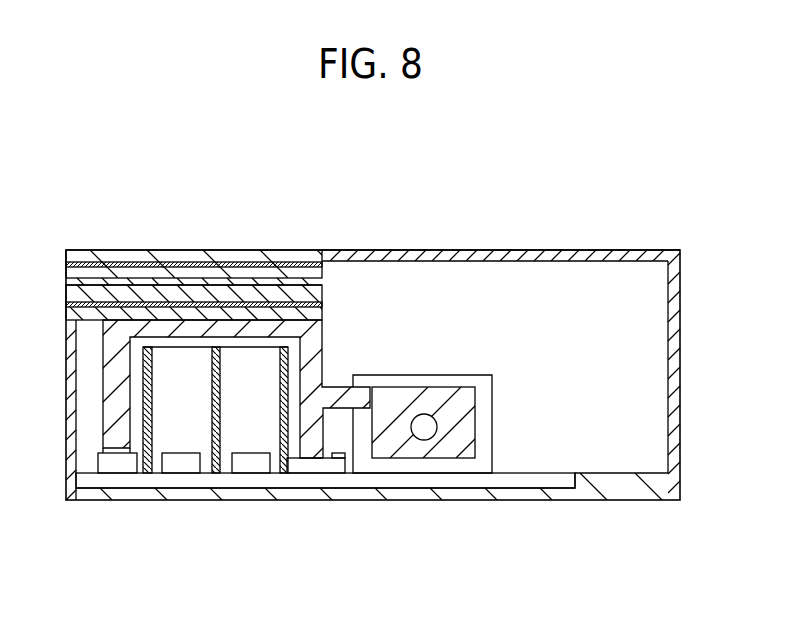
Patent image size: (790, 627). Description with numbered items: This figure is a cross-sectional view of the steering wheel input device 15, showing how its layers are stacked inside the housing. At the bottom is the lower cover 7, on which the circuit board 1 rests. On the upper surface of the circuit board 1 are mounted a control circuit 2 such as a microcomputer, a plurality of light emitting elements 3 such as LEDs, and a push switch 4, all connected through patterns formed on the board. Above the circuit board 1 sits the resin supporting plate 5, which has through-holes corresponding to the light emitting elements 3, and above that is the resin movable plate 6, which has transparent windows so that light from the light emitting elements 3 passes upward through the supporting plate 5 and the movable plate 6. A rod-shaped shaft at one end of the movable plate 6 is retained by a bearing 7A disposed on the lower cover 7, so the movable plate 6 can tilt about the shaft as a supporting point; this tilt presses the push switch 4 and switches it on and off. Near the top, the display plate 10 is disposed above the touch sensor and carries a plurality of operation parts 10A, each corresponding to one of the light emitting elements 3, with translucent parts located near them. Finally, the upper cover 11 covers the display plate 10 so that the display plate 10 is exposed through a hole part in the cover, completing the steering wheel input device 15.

The circuit board 1 is at (250, 480).
The control circuit 2 is at (333, 465).
The light emitting elements 3 is at (237, 467).
The push switch 4 is at (117, 465).
The supporting plate 5 is at (287, 470).
The movable plate 6 is at (315, 343).
The lower cover 7 is at (638, 488).
The bearing 7A is at (427, 427).
The display plate 10 is at (160, 250).
The operation parts 10A is at (255, 265).
The upper cover 11 is at (592, 252).
The steering wheel input device 15 is at (522, 213).